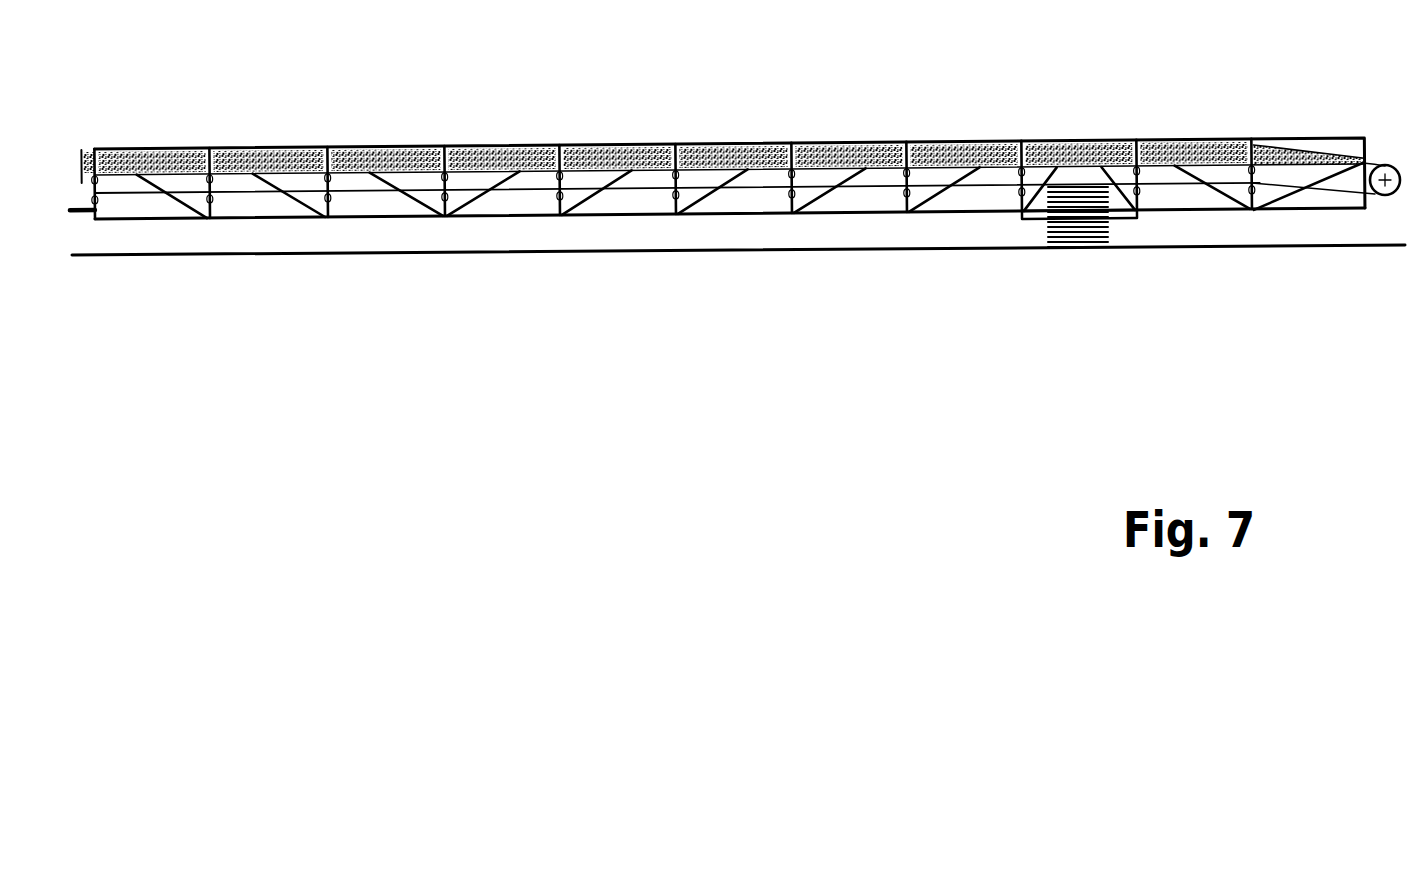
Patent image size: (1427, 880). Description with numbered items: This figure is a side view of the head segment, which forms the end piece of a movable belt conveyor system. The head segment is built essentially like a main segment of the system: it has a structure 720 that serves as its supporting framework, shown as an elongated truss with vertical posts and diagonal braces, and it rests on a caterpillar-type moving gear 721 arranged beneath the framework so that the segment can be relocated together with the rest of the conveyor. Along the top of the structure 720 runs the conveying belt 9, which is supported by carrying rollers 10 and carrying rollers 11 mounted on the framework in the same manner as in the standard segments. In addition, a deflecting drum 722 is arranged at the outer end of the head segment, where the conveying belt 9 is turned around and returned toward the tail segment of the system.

The conveying belt 9 is at (604, 146).
The carrying rollers 10 is at (787, 174).
The carrying rollers 11 is at (1020, 192).
The structure 720 is at (287, 217).
The caterpillar-type moving gear 721 is at (1072, 247).
The deflecting drum 722 is at (1383, 196).